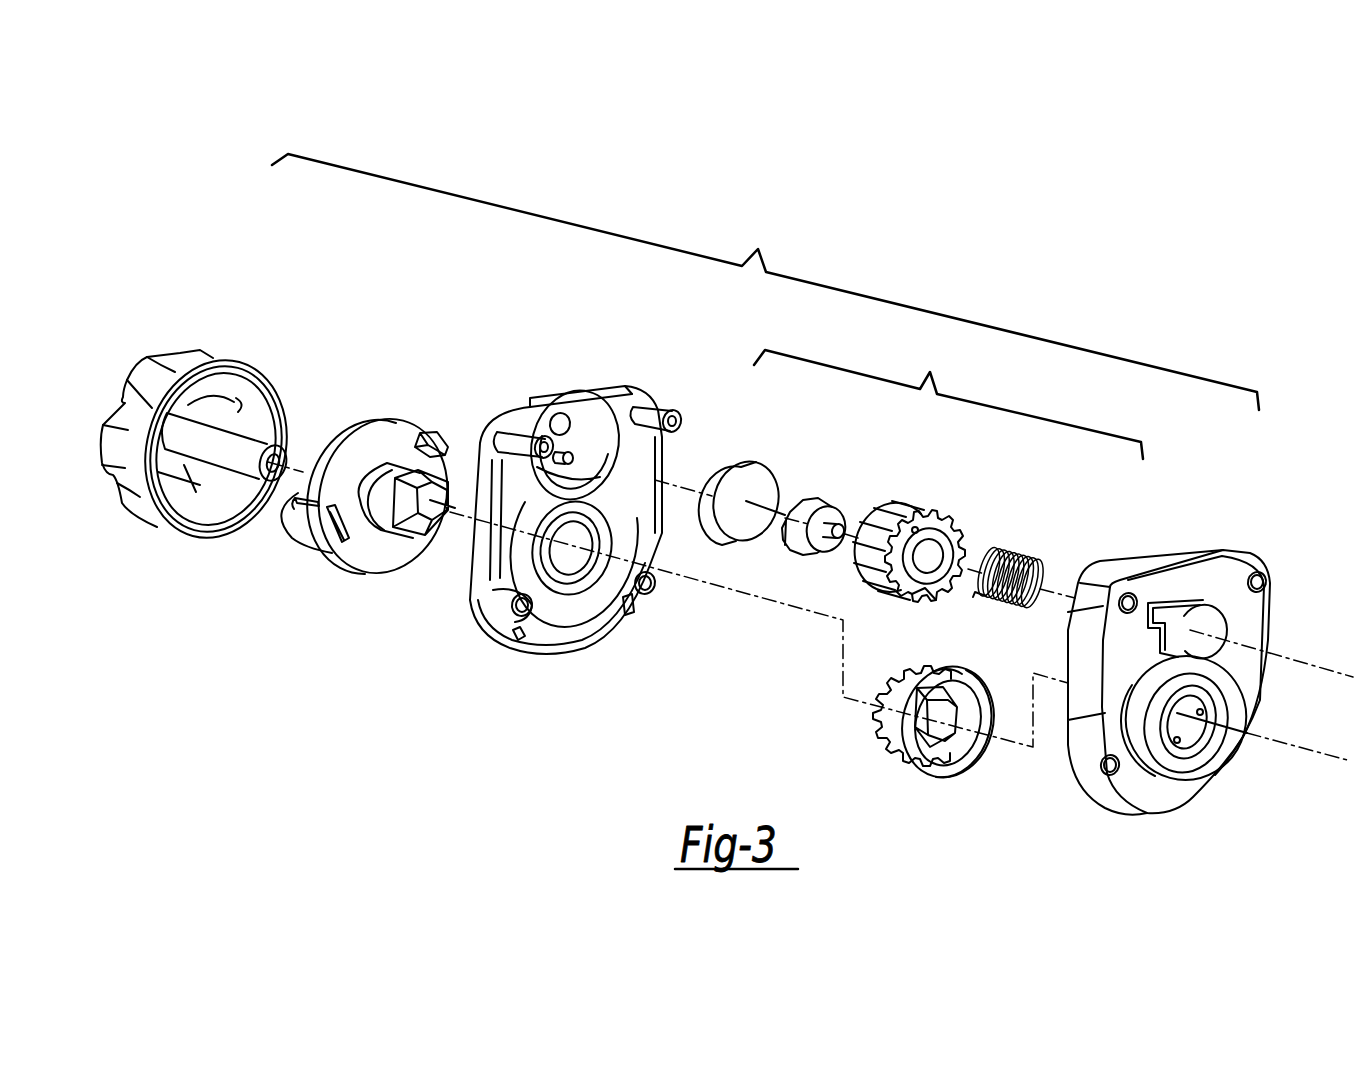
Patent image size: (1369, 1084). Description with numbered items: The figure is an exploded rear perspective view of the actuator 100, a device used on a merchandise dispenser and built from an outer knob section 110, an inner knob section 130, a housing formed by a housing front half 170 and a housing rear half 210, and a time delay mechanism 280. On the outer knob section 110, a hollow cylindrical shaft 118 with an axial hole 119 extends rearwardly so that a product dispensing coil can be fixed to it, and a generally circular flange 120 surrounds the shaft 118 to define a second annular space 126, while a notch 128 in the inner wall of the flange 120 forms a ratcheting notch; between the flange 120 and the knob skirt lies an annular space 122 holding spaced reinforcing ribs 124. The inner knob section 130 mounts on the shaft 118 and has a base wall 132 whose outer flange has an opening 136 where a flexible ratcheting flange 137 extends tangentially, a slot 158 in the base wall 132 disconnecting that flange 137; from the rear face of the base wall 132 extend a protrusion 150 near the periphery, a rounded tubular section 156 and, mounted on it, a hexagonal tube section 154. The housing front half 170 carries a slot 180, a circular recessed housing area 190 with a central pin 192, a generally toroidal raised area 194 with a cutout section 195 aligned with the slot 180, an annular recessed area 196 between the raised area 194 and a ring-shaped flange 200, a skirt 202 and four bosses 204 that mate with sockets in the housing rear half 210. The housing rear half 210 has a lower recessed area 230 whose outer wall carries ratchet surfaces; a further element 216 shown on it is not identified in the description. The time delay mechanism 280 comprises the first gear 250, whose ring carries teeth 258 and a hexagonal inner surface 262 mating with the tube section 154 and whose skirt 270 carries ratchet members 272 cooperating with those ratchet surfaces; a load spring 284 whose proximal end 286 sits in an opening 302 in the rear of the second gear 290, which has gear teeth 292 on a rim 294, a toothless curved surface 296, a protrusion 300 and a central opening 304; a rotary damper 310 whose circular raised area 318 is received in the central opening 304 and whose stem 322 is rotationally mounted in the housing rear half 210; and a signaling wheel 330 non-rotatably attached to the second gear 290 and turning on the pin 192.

The actuator 100 is at (765, 282).
The outer knob section 110 is at (189, 445).
The hollow cylindrical shaft 118 is at (175, 443).
The axial hole 119 is at (287, 462).
The generally circular flange 120 is at (189, 416).
The annular space 122 is at (220, 515).
The reinforcing ribs 124 is at (195, 522).
The second annular space 126 is at (218, 398).
The notch 128 is at (167, 492).
The inner knob section 130 is at (350, 476).
The base wall 132 is at (412, 540).
The opening 136 is at (300, 494).
The ratcheting flange 137 is at (310, 513).
The protrusion 150 is at (429, 433).
The tube section 154 is at (403, 523).
The rounded tubular section 156 is at (383, 467).
The slot 158 is at (347, 558).
The housing front half 170 is at (575, 518).
The slot 180 is at (578, 487).
The recessed housing area 190 is at (638, 403).
The pin 192 is at (545, 412).
The generally toroidal raised area 194 is at (543, 617).
The cutout section 195 is at (492, 475).
The annular recessed area 196 is at (563, 587).
The ring-shaped flange 200 is at (582, 580).
The skirt 202 is at (648, 585).
The bosses 204 is at (510, 600).
The housing rear half 210 is at (1206, 722).
The cover tab 216 is at (1220, 630).
The lower recessed area 230 is at (1198, 770).
The first gear 250 is at (923, 733).
The teeth 258 is at (880, 737).
The inner surface 262 is at (937, 732).
The skirt 270 is at (955, 675).
The ratchet members 272 is at (933, 767).
The time delay mechanism 280 is at (948, 396).
The load spring 284 is at (1049, 582).
The proximal end of spring 286 is at (978, 592).
The second gear 290 is at (895, 534).
The gear teeth 292 is at (868, 550).
The rim 294 is at (888, 497).
The curved surface 296 is at (867, 583).
The protrusion 300 is at (935, 592).
The opening 302 is at (926, 518).
The central opening 304 is at (940, 552).
The rotary damper 310 is at (772, 474).
The circular raised area 318 is at (805, 497).
The stem 322 is at (830, 523).
The signaling wheel 330 is at (715, 460).